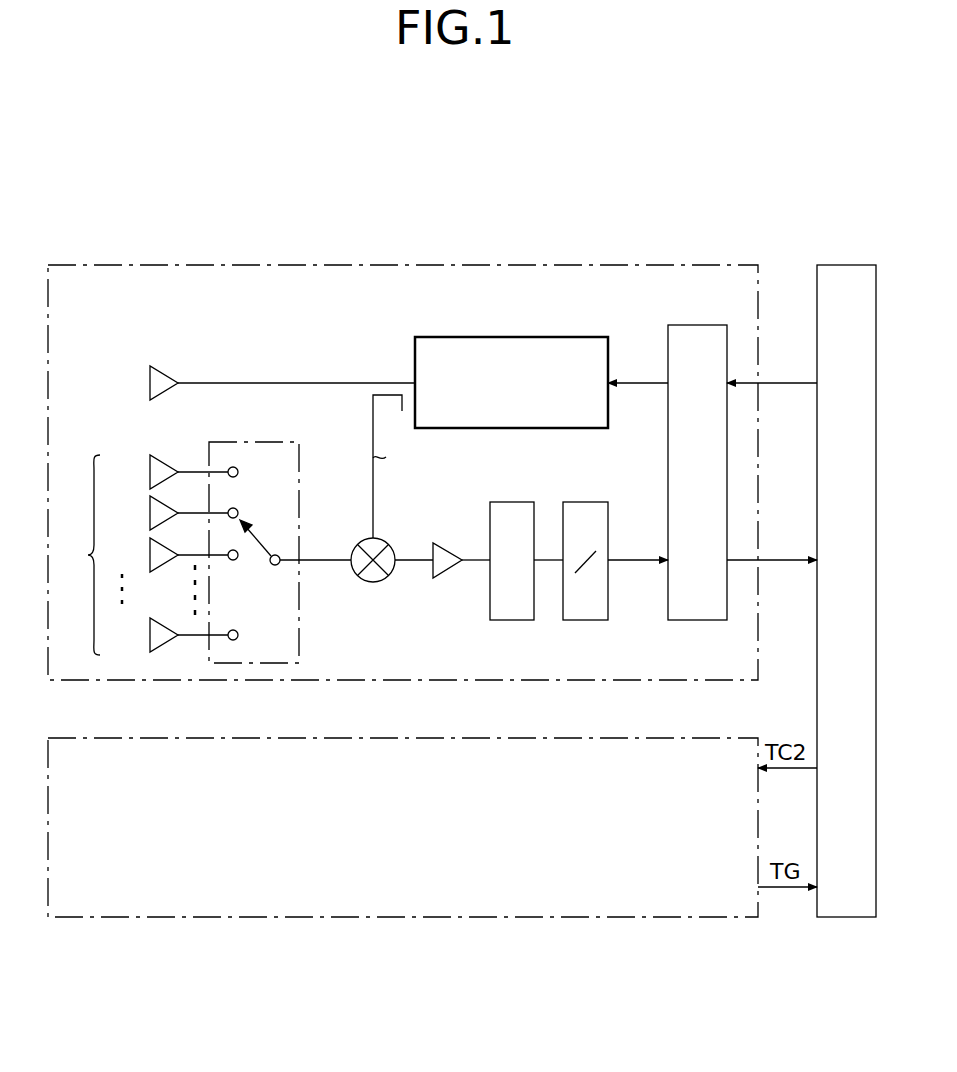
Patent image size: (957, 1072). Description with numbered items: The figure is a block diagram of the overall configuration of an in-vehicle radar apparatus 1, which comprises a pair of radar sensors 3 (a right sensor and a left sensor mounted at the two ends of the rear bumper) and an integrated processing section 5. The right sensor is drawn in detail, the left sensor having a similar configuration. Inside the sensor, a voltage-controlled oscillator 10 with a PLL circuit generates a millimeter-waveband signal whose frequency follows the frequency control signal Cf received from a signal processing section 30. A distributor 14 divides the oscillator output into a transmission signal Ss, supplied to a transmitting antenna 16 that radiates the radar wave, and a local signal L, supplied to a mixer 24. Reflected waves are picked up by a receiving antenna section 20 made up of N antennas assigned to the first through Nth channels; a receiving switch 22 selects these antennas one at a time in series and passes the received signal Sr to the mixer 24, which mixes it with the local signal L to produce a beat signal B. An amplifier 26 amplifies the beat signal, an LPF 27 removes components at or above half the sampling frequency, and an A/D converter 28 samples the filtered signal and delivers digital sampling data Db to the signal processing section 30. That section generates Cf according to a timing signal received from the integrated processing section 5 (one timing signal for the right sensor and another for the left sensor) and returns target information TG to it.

The in-vehicle radar apparatus 1 is at (515, 153).
The radar sensor 3 is at (699, 265).
The integrated processing section 5 is at (846, 265).
The voltage-controlled oscillator with a PLL circuit 10 is at (579, 337).
The distributor 14 is at (368, 396).
The transmitting antenna 16 is at (163, 370).
The receiving antenna section 20 is at (145, 555).
The receiving switch 22 is at (237, 442).
The mixer 24 is at (373, 582).
The amplifier 26 is at (447, 580).
The LPF 27 is at (511, 502).
The A/D converter 28 is at (582, 502).
The signal processing section 30 is at (685, 325).